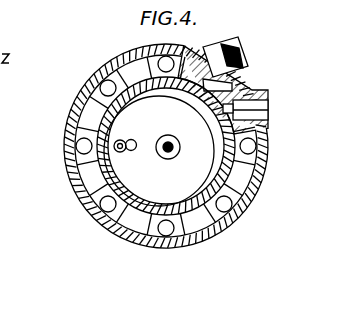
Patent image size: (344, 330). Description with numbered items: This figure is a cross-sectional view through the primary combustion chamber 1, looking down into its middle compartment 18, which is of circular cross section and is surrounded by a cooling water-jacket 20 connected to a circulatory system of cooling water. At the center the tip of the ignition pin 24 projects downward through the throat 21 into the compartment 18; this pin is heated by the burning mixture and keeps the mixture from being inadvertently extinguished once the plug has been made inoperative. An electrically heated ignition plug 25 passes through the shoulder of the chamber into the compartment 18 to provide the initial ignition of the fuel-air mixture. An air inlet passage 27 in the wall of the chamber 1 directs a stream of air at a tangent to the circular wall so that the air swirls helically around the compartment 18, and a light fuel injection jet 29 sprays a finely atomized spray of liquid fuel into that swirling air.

The primary combustion chamber 1 is at (247, 207).
The compartment 18 is at (232, 177).
The cooling water-jacket 20 is at (194, 227).
The throat 21 is at (168, 159).
The ignition pin 24 is at (168, 135).
The ignition plug 25 is at (116, 143).
The air inlet passage 27 is at (212, 60).
The light fuel injection jet 29 is at (268, 108).